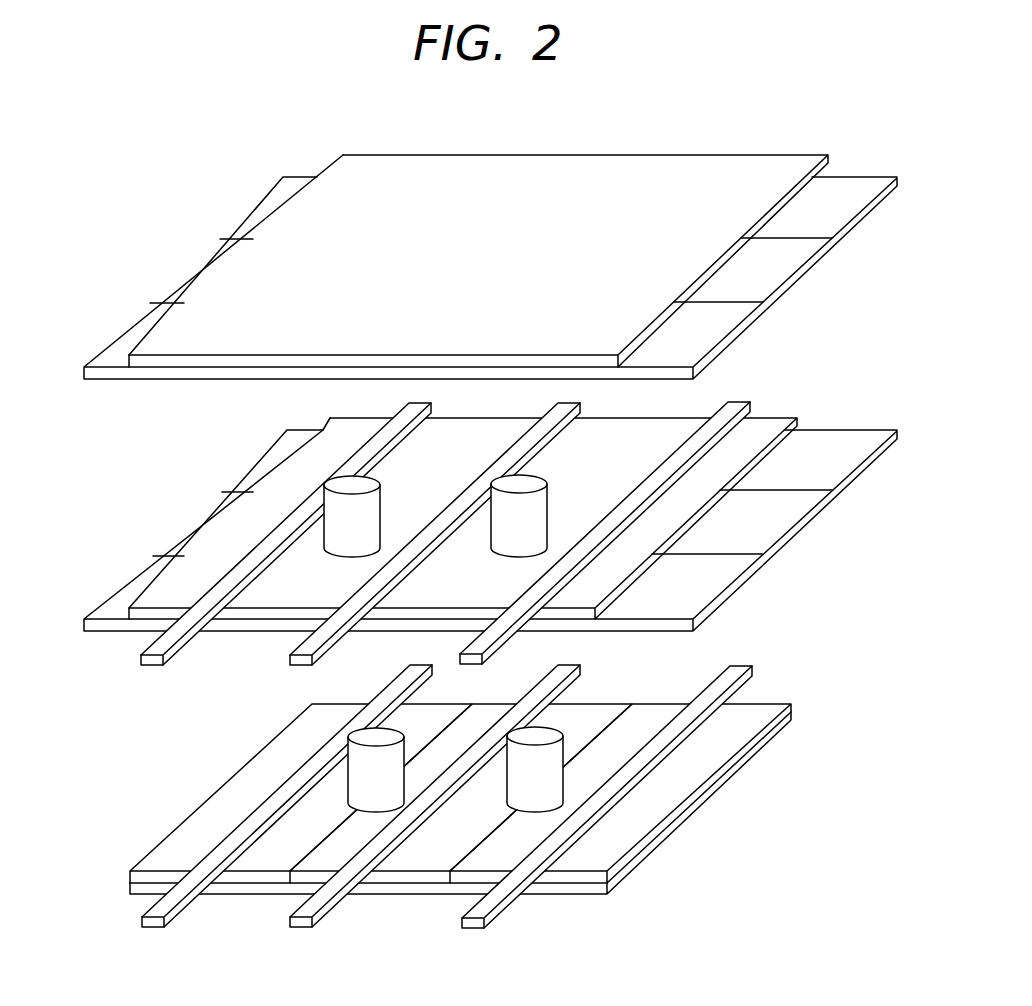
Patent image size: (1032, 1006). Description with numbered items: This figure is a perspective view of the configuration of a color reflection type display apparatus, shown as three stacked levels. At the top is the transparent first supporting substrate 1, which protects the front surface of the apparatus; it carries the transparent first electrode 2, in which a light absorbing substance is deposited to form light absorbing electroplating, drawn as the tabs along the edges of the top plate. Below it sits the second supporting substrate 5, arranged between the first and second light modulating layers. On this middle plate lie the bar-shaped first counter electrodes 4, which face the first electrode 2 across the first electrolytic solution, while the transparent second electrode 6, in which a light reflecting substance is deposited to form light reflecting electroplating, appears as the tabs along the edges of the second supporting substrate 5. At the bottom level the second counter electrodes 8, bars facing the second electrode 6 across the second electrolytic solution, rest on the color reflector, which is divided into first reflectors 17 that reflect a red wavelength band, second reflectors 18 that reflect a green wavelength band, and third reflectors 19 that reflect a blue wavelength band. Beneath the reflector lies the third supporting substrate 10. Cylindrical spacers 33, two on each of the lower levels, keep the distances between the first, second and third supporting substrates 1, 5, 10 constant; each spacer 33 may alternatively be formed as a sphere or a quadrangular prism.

The first supporting substrate 1 is at (678, 165).
The first electrode 2 is at (294, 195).
The first counter electrodes 4 is at (433, 410).
The second supporting substrate 5 is at (297, 462).
The second electrode 6 is at (257, 484).
The second counter electrodes 8 is at (396, 678).
The third supporting substrate 10 is at (128, 890).
The first reflectors 17 is at (187, 832).
The second reflectors 18 is at (415, 853).
The third reflectors 19 is at (608, 853).
The spacers 33 is at (383, 505).